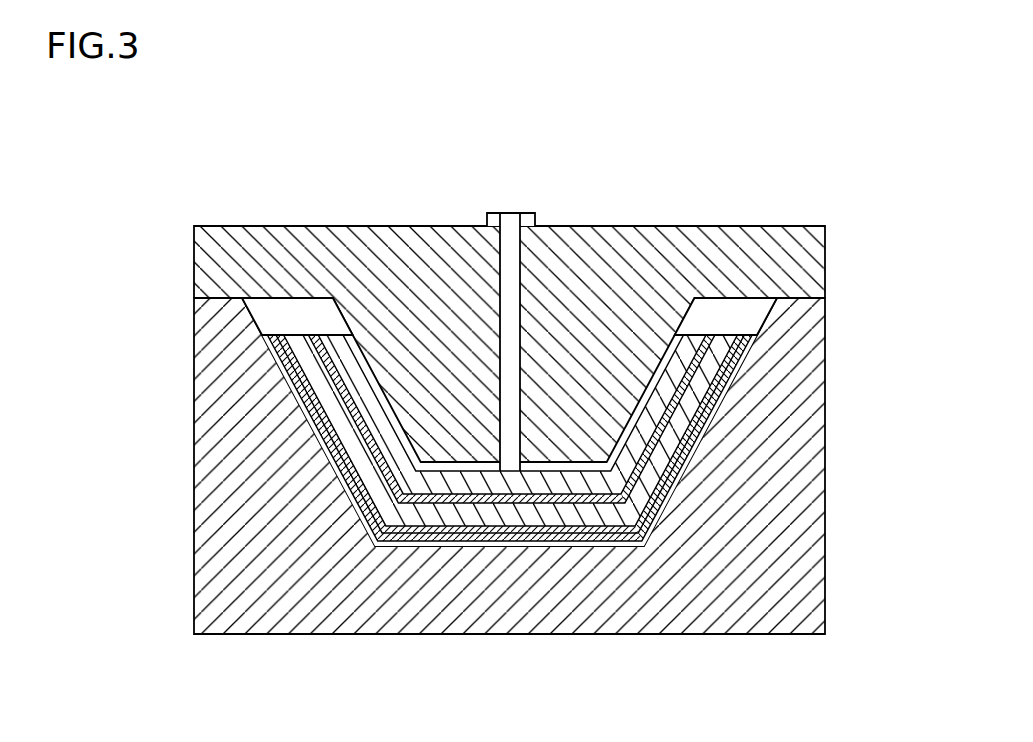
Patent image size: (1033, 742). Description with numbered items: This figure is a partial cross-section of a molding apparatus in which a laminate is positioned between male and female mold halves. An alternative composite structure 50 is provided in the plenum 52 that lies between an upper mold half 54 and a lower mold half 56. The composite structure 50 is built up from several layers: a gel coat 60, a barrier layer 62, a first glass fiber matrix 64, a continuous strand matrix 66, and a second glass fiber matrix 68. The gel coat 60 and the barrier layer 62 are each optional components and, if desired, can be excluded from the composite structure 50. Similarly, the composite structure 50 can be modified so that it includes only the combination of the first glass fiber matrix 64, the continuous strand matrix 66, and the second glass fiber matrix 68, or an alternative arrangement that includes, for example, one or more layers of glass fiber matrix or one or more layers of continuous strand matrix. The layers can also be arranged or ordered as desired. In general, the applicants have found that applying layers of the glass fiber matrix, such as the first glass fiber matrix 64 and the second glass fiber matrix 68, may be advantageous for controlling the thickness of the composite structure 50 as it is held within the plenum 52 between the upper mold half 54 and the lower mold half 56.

The composite structure 50 is at (283, 292).
The plenum 52 is at (731, 305).
The upper mold half 54 is at (418, 267).
The lower mold half 56 is at (268, 613).
The gel coat 60 is at (580, 543).
The barrier layer 62 is at (621, 530).
The first glass fiber matrix 64 is at (665, 445).
The continuous strand matrix 66 is at (672, 398).
The second glass fiber matrix 68 is at (675, 358).